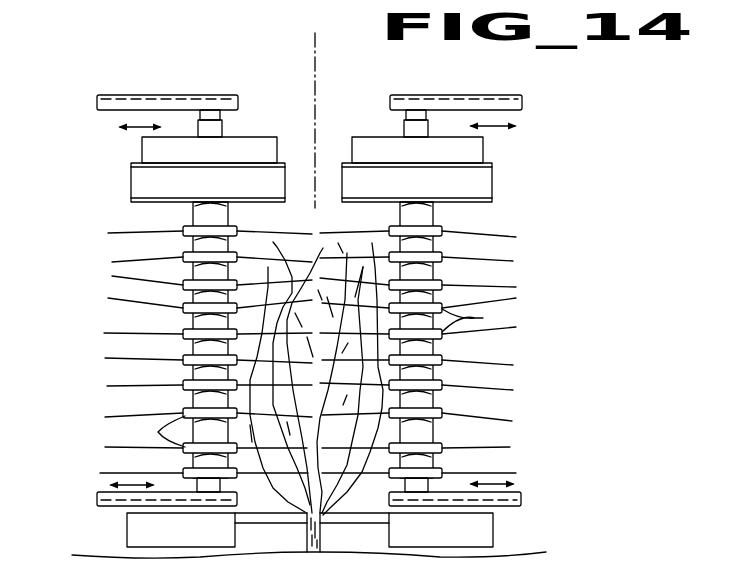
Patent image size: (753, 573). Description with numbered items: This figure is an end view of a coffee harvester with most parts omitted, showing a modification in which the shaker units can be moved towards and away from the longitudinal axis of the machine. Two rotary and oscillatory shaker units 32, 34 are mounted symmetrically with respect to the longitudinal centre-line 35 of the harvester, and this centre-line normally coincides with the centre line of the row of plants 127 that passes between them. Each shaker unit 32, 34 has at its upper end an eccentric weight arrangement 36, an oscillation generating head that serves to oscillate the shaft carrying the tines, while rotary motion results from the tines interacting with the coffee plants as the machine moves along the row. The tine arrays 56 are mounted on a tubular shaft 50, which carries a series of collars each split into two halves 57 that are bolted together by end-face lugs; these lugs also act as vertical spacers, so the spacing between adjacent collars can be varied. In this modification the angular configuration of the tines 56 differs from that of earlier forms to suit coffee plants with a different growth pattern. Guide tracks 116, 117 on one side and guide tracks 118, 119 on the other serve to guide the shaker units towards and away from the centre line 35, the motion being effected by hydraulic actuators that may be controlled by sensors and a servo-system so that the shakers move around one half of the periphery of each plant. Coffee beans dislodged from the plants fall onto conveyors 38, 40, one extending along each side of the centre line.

The shaker unit 32 is at (301, 318).
The shaker unit 34 is at (513, 319).
The longitudinal centre-line 35 is at (310, 40).
The eccentric weight arrangement 36 is at (129, 176).
The conveyor 38 is at (127, 533).
The conveyor 40 is at (495, 535).
The tubular shaft 50 is at (193, 217).
The tine arrays 56 is at (108, 298).
The collar halves 57 is at (316, 378).
The guide track 116 is at (97, 498).
The guide track 117 is at (97, 103).
The guide track 118 is at (522, 103).
The guide track 119 is at (522, 498).
The row of plants 127 is at (305, 532).